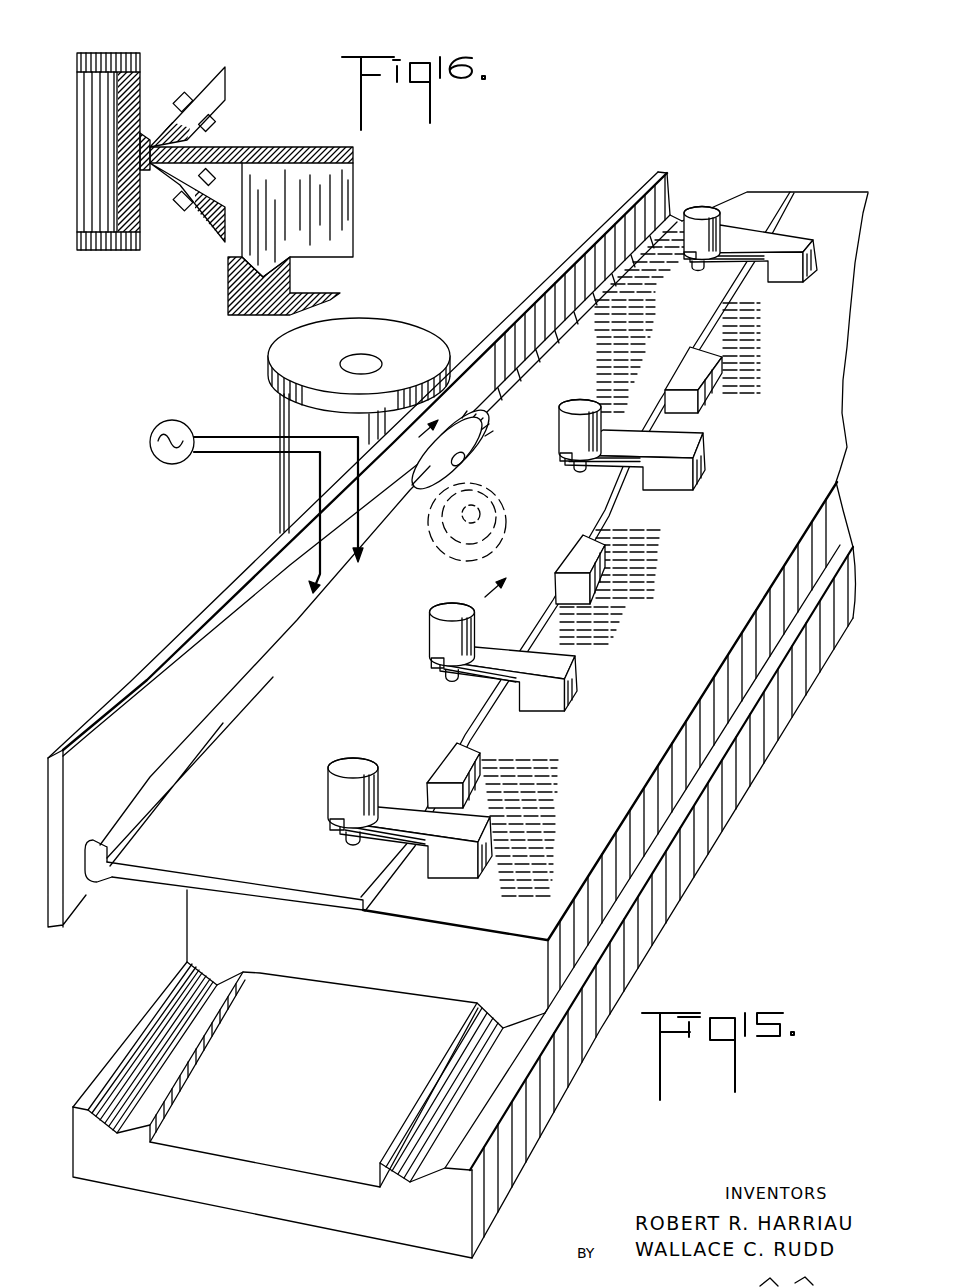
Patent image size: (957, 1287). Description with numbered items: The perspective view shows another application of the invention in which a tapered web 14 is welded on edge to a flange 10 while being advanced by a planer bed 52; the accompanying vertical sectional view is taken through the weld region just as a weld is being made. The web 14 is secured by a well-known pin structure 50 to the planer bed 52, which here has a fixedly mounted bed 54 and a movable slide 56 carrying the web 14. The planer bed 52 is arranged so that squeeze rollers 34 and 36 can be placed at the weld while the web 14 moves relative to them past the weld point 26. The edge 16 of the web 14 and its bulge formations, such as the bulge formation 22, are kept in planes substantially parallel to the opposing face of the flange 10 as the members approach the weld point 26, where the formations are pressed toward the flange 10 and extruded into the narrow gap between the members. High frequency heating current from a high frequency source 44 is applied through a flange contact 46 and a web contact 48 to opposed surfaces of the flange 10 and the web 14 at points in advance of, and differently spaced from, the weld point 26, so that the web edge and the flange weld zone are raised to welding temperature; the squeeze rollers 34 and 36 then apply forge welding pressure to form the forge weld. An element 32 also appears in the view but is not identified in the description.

In FIG. 15, the flange 10 is at (80, 728).
In FIG. 16, the tapered web 14 is at (292, 146).
In FIG. 15, the tapered web 14 is at (183, 862).
In FIG. 15, the edge of the web 16 is at (475, 499).
In FIG. 15, the bulge formation 22 is at (150, 783).
In FIG. 15, the weld point 26 is at (396, 489).
In FIG. 16, the electrode wheel 32 is at (116, 58).
In FIG. 15, the electrode wheel 32 is at (432, 342).
In FIG. 16, the squeeze roller 34 is at (222, 80).
In FIG. 15, the squeeze roller 34 is at (472, 441).
In FIG. 16, the squeeze roller 36 is at (210, 223).
In FIG. 15, the squeeze roller 36 is at (504, 510).
In FIG. 15, the high frequency source 44 is at (152, 452).
In FIG. 15, the flange contact 46 is at (315, 584).
In FIG. 15, the web contact 48 is at (363, 562).
In FIG. 15, the pin structure 50 is at (494, 851).
In FIG. 15, the planer bed 52 is at (708, 874).
In FIG. 16, the fixedly mounted bed 54 is at (236, 294).
In FIG. 15, the fixedly mounted bed 54 is at (383, 1232).
In FIG. 16, the movable slide 56 is at (345, 205).
In FIG. 15, the movable slide 56 is at (381, 980).